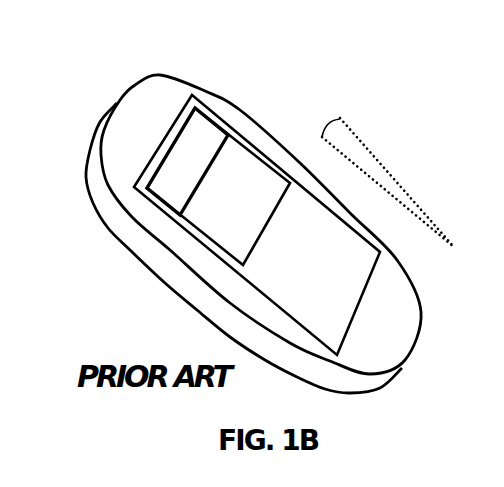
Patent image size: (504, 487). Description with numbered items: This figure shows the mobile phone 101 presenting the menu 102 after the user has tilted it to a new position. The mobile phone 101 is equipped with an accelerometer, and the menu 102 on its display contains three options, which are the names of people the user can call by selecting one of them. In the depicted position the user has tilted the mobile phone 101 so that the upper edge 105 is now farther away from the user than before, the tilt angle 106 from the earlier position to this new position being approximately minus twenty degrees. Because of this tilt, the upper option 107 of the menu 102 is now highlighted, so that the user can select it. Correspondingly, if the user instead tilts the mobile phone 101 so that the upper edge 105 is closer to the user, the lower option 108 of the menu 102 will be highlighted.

The mobile phone 101 is at (162, 74).
The upper edge 105 is at (118, 101).
The menu 102 is at (284, 193).
The lower option 108 is at (248, 244).
The upper option 107 is at (202, 132).
The tilt angle 106 is at (340, 119).